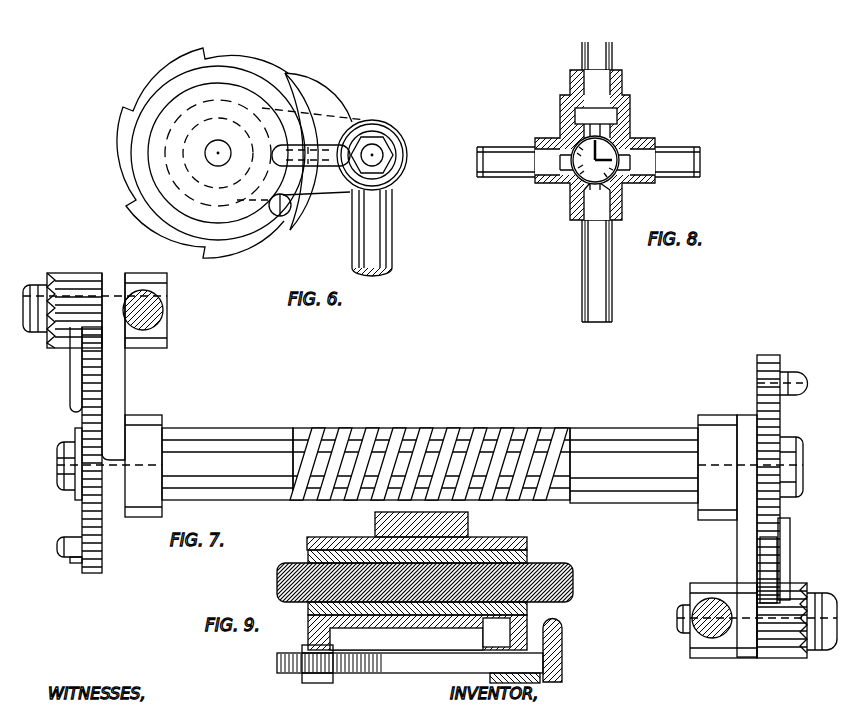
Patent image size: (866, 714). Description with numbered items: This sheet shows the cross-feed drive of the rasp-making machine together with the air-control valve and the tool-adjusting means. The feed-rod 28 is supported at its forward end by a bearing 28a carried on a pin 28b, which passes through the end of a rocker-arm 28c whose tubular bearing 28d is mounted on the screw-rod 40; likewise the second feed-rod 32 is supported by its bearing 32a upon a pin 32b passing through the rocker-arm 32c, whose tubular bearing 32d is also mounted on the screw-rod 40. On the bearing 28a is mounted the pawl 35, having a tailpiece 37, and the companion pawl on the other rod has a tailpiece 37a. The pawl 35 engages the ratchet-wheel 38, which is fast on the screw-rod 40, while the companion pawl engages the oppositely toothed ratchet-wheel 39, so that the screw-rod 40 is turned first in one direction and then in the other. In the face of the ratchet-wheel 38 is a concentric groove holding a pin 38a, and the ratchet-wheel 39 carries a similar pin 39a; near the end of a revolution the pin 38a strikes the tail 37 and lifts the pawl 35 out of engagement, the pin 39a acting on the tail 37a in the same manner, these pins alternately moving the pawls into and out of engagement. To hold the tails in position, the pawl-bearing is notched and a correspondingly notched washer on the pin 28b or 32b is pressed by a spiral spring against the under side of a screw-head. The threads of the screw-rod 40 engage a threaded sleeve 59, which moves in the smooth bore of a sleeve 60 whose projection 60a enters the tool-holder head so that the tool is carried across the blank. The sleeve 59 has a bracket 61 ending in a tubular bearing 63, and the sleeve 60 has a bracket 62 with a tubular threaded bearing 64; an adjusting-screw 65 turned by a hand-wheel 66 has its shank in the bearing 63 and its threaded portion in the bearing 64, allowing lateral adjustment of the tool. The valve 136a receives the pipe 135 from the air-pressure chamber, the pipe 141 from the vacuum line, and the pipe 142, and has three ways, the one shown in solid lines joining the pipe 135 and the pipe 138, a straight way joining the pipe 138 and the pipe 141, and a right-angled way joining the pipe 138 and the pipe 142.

In FIG. 6, the feed-rod 28 is at (392, 228).
In FIG. 7, the feed-rod 28 is at (690, 600).
In FIG. 7, the bearing 28a is at (710, 658).
In FIG. 7, the pin 28b is at (677, 620).
In FIG. 6, the rocker-arm 28c is at (350, 200).
In FIG. 7, the rocker-arm 28c is at (745, 545).
In FIG. 7, the tubular bearing 28d is at (686, 520).
In FIG. 7, the feed-rod 32 is at (170, 330).
In FIG. 7, the bearing 32a is at (170, 283).
In FIG. 7, the pin 32b is at (170, 304).
In FIG. 7, the rocker-arm 32c is at (125, 380).
In FIG. 7, the tubular bearing 32d is at (162, 425).
In FIG. 6, the pawl 35 is at (350, 113).
In FIG. 7, the pawl 35 is at (765, 560).
In FIG. 6, the tailpiece 37 is at (302, 168).
In FIG. 7, the tailpiece 37 is at (790, 547).
In FIG. 7, the tailpiece 37a is at (70, 390).
In FIG. 6, the ratchet-wheel 38 is at (206, 50).
In FIG. 7, the ratchet-wheel 38 is at (783, 418).
In FIG. 6, the pin 38a is at (284, 217).
In FIG. 7, the pin 38a is at (784, 372).
In FIG. 7, the ratchet-wheel 39 is at (95, 547).
In FIG. 7, the pin 39a is at (74, 563).
In FIG. 6, the screw-rod 40 is at (200, 160).
In FIG. 7, the screw-rod 40 is at (442, 450).
In FIG. 9, the screw-rod 40 is at (280, 582).
In FIG. 9, the sleeve 59 is at (527, 560).
In FIG. 9, the sleeve 60 is at (307, 542).
In FIG. 9, the projection 60a is at (375, 518).
In FIG. 9, the bracket 61 is at (500, 640).
In FIG. 9, the bracket 62 is at (335, 638).
In FIG. 9, the tubular bearing 63 is at (495, 680).
In FIG. 9, the tubular threaded bearing 64 is at (316, 684).
In FIG. 9, the adjusting-screw 65 is at (390, 673).
In FIG. 9, the hand-wheel 66 is at (562, 642).
In FIG. 8, the pipe 135 is at (700, 160).
In FIG. 8, the valve 136a is at (632, 137).
In FIG. 8, the pipe 138 is at (598, 45).
In FIG. 8, the pipe 141 is at (598, 314).
In FIG. 8, the pipe 142 is at (480, 160).